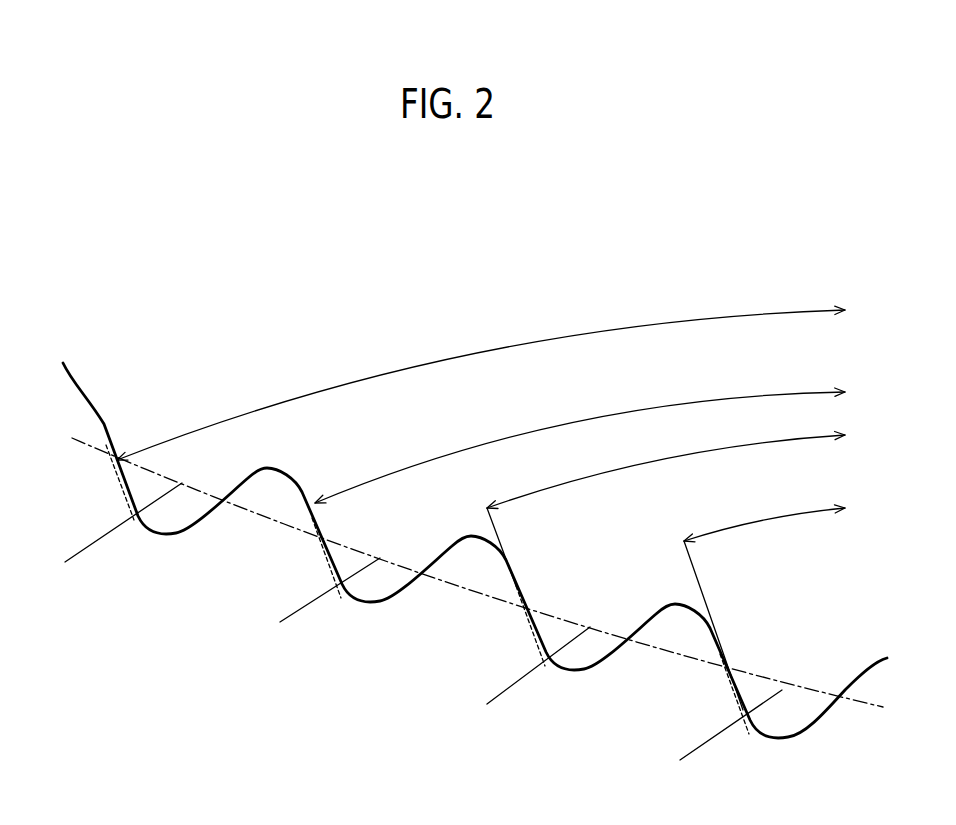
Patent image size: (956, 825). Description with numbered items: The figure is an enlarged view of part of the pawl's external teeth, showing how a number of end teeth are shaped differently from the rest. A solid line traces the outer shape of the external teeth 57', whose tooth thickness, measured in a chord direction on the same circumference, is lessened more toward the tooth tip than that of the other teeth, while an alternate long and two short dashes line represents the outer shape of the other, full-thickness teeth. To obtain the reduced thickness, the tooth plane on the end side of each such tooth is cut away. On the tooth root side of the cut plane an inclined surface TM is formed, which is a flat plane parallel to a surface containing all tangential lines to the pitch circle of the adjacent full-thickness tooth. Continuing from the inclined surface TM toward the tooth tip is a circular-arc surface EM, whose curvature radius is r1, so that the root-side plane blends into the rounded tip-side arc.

The external teeth 57' is at (475, 555).
The inclined surface TM is at (722, 658).
The circular-arc surface EM is at (740, 700).
The curvature radius r1 is at (423, 631).